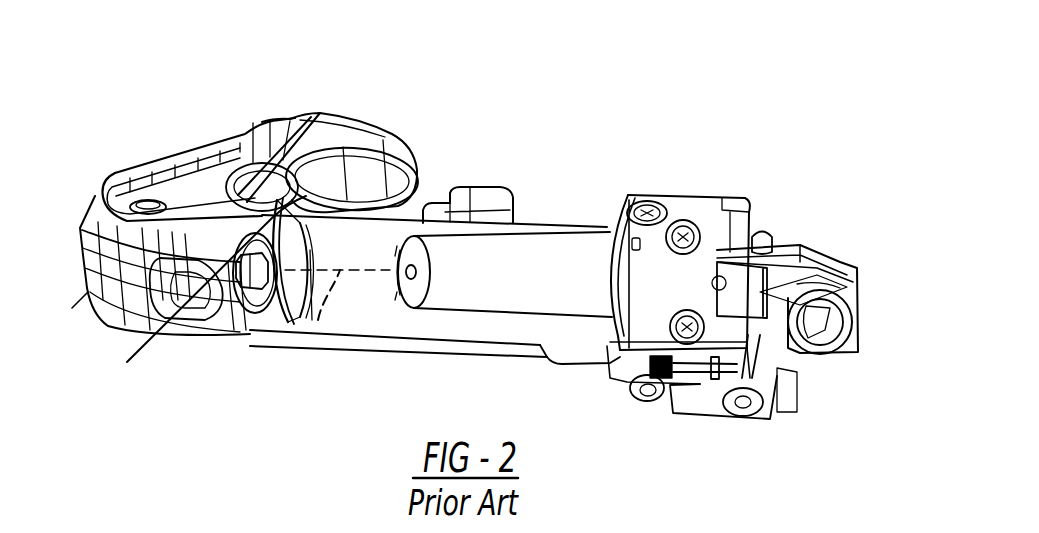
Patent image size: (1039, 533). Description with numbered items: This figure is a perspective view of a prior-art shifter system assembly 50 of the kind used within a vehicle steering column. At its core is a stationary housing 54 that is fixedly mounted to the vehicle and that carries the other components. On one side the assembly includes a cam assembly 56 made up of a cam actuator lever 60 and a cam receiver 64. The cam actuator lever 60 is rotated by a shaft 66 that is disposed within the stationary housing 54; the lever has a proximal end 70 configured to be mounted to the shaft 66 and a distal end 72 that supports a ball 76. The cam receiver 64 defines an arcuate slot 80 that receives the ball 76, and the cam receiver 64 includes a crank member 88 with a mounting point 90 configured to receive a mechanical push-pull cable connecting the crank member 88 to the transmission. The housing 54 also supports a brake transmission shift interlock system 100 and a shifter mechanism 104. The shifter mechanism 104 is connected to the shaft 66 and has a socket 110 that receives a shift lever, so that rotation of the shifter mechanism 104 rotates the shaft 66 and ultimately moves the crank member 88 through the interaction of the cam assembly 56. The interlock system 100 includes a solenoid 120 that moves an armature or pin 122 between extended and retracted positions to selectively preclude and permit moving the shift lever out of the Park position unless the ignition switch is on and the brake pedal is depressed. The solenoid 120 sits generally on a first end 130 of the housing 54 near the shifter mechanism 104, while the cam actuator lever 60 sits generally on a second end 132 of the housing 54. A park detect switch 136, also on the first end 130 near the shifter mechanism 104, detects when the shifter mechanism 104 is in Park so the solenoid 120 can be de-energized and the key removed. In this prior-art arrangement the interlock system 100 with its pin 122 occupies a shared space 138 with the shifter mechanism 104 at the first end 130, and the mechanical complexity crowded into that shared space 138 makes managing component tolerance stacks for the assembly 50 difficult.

The shifter system assembly 50 is at (602, 120).
The stationary housing 54 is at (372, 300).
The cam assembly 56 is at (299, 88).
The cam actuator lever 60 is at (152, 337).
The cam receiver 64 is at (367, 138).
The shaft 66 is at (318, 320).
The proximal end 70 is at (268, 300).
The distal end 72 is at (418, 156).
The ball 76 is at (305, 150).
The arcuate slot 80 is at (400, 212).
The crank member 88 is at (193, 160).
The mounting point 90 is at (148, 200).
The brake transmission shift interlock (BTSI) system 100 is at (643, 317).
The shifter mechanism 104 is at (835, 360).
The socket 110 is at (850, 270).
The solenoid 120 is at (510, 273).
The pin 122 is at (601, 286).
The first end 130 is at (598, 203).
The second end 132 is at (336, 320).
The park detect switch 136 is at (705, 266).
The shared space 138 is at (702, 184).